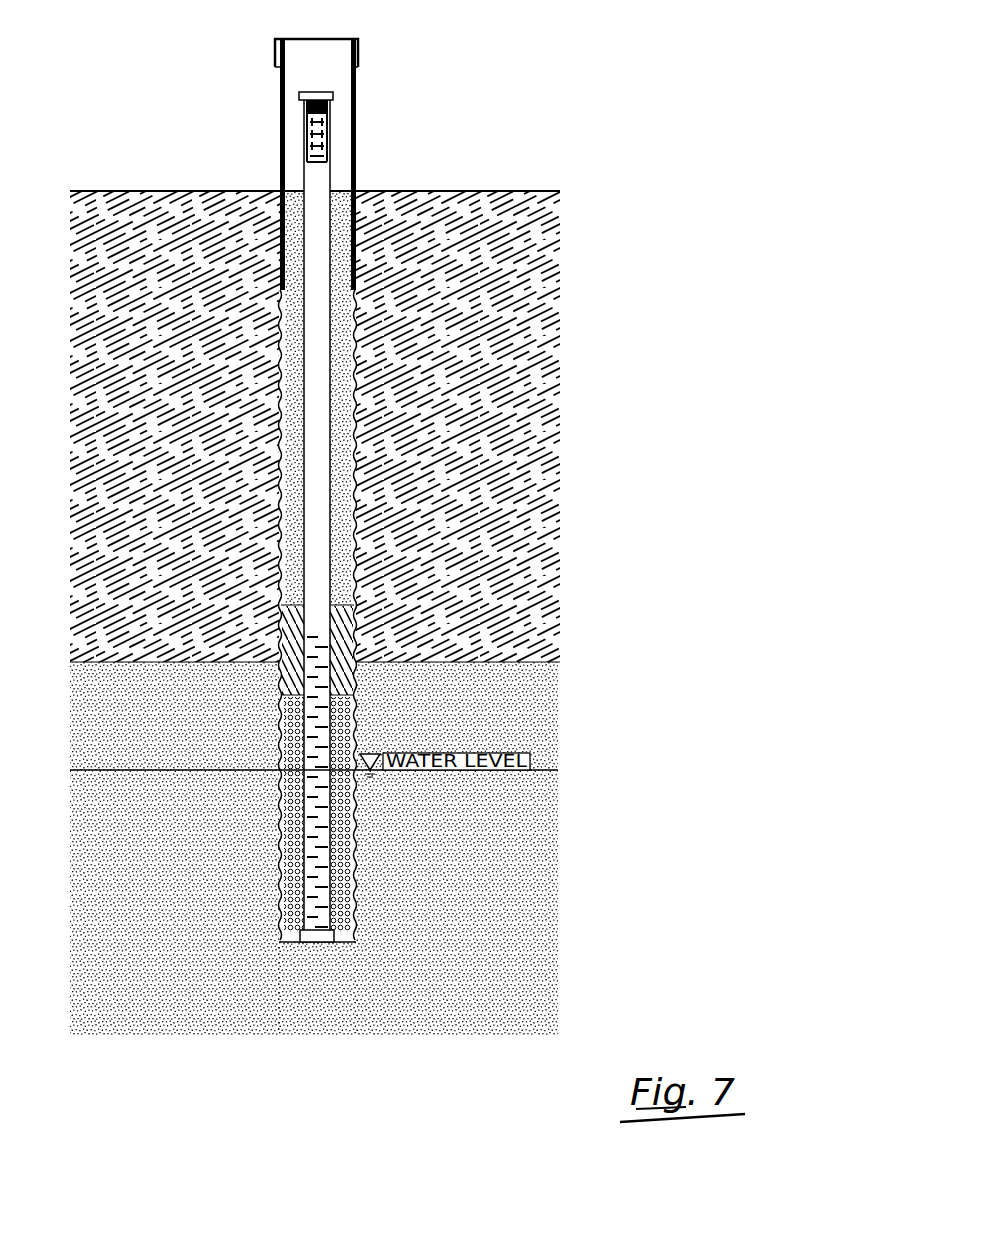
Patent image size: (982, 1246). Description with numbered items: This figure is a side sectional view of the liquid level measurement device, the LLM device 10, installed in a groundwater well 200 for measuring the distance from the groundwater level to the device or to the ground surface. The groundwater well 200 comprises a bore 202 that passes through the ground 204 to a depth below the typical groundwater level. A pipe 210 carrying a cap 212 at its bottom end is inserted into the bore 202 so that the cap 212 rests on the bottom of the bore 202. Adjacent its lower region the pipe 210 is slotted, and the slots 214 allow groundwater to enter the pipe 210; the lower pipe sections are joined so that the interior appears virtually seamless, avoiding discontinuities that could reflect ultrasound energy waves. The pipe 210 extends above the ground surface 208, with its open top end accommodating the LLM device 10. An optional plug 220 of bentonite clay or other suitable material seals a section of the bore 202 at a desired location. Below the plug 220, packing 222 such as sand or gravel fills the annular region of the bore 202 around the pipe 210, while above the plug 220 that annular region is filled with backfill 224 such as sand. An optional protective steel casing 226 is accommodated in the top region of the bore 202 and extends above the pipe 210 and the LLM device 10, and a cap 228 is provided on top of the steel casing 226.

The LLM device 10 is at (333, 108).
The groundwater well 200 is at (715, 110).
The bore 202 is at (357, 277).
The ground 204 is at (540, 420).
The ground surface 208 is at (125, 190).
The pipe 210 is at (331, 346).
The cap 212 is at (336, 930).
The slots 214 is at (323, 848).
The plug 220 is at (352, 637).
The packing 222 is at (352, 733).
The backfill 224 is at (343, 216).
The protective steel casing 226 is at (358, 112).
The cap 228 is at (302, 37).